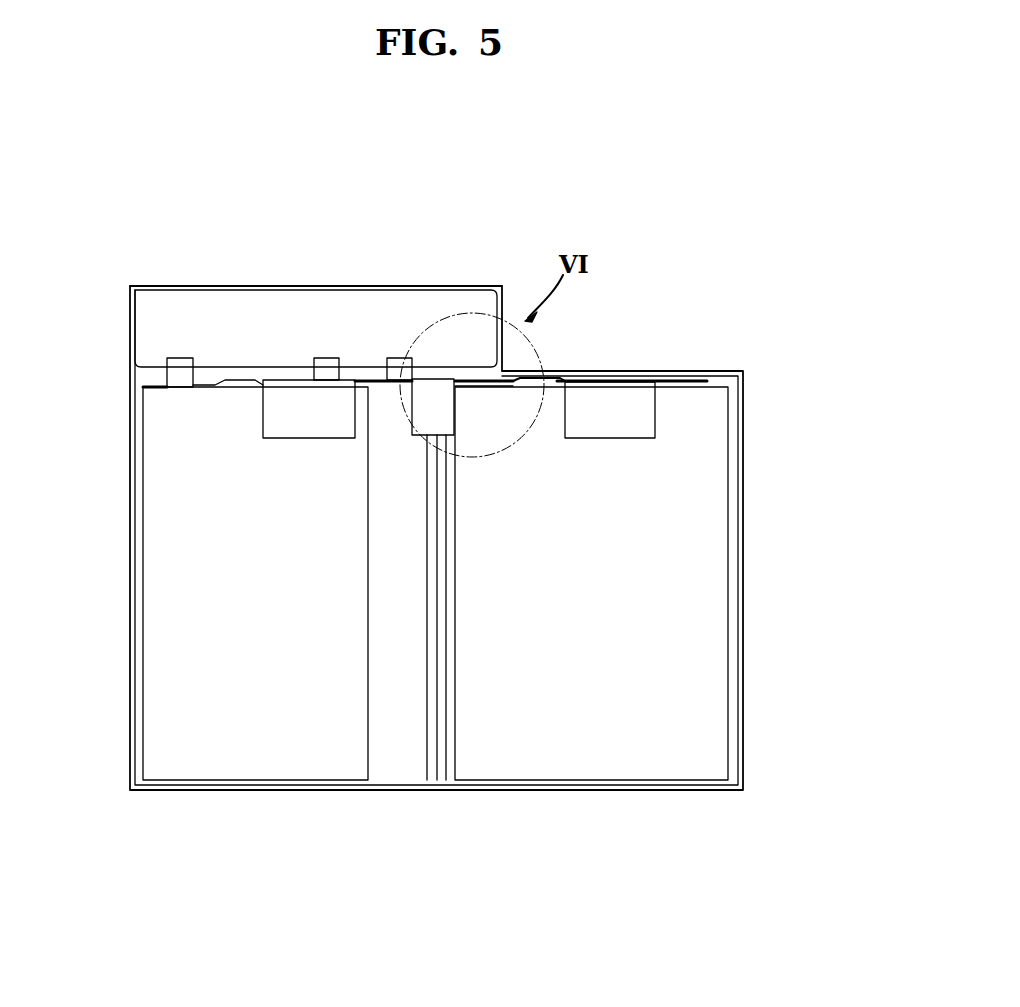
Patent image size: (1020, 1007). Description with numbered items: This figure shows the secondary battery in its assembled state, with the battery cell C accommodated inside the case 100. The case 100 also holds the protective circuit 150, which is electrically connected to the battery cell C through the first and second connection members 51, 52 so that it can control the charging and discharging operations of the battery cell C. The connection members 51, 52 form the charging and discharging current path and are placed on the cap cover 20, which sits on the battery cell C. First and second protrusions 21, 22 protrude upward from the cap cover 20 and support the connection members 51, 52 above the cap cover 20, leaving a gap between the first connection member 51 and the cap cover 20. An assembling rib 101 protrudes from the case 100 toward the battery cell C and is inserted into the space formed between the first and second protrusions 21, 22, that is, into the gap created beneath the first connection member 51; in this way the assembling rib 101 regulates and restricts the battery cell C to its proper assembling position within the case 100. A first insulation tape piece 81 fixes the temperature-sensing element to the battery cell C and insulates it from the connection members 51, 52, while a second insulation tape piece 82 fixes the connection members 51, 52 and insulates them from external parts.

The case 100 is at (170, 283).
The protective circuit 150 is at (277, 313).
The second connection member 52 is at (330, 363).
The first connection member 51 is at (397, 363).
The second protrusion 22 is at (143, 383).
The first protrusion 21 is at (552, 378).
The cap cover 20 is at (720, 380).
The assembling rib 101 is at (495, 390).
The second insulation tape piece 82 is at (447, 423).
The first insulation tape piece 81 is at (610, 427).
The battery cell C is at (257, 770).